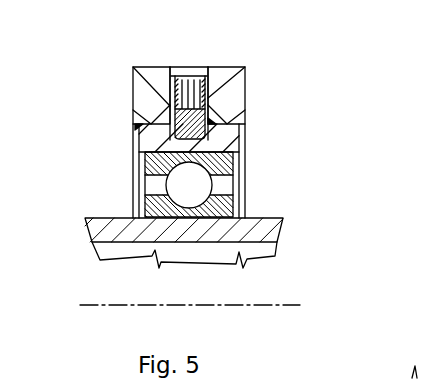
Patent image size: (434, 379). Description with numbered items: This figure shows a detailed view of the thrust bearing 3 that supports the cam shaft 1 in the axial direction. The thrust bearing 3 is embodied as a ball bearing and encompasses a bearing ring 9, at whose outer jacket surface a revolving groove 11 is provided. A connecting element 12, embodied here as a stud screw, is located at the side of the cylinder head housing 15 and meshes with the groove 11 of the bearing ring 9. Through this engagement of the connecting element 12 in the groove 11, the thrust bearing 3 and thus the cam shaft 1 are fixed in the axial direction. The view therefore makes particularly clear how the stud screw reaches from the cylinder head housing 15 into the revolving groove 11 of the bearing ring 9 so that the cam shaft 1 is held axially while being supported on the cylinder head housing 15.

The cam shaft 1 is at (290, 289).
The thrust bearing 3 is at (248, 185).
The bearing ring 9 is at (224, 142).
The revolving groove 11 is at (207, 132).
The connecting element 12 is at (202, 117).
The cylinder head housing 15 is at (222, 83).